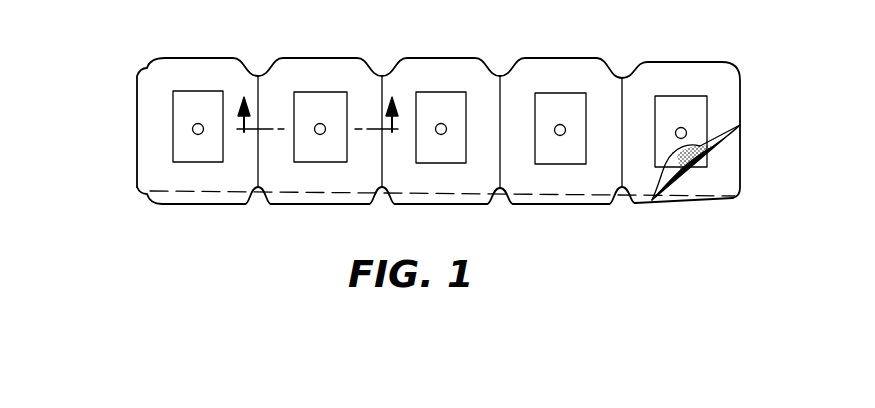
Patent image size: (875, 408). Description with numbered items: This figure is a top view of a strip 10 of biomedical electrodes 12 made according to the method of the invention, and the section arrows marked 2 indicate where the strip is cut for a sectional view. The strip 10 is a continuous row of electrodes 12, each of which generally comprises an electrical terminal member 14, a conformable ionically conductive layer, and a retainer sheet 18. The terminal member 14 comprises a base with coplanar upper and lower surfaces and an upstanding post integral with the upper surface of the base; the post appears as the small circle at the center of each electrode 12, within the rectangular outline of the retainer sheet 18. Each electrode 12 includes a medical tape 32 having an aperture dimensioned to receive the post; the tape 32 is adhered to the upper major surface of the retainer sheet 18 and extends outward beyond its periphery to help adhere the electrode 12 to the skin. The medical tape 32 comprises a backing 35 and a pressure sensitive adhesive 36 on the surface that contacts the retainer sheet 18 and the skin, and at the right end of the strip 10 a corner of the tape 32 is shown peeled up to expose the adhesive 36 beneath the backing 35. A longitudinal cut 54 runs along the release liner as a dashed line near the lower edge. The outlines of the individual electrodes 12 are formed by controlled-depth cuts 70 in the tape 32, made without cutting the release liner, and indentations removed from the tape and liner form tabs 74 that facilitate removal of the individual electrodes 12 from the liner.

The strip 10 is at (709, 56).
The biomedical electrode 12 is at (641, 64).
The electrical terminal member 14 is at (320, 105).
The retainer sheet 18 is at (298, 92).
The medical tape 32 is at (743, 125).
The backing 35 is at (470, 70).
The pressure sensitive adhesive 36 is at (697, 165).
The longitudinal cut 54 is at (207, 191).
The controlled-depth cut 70 is at (260, 174).
The tab 74 is at (523, 205).
The section line 2- 2 is at (320, 135).